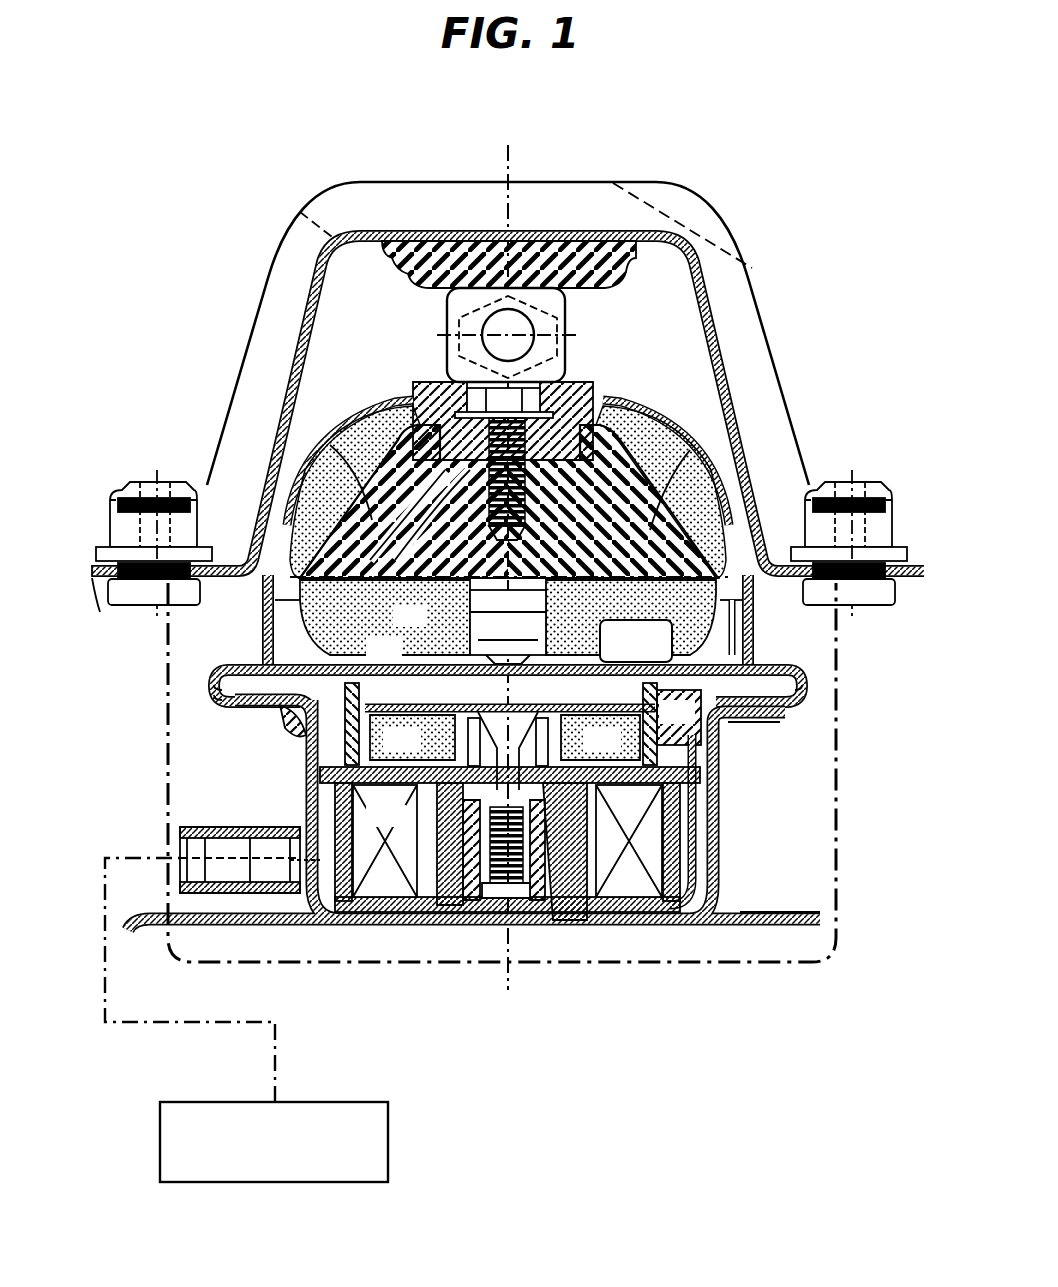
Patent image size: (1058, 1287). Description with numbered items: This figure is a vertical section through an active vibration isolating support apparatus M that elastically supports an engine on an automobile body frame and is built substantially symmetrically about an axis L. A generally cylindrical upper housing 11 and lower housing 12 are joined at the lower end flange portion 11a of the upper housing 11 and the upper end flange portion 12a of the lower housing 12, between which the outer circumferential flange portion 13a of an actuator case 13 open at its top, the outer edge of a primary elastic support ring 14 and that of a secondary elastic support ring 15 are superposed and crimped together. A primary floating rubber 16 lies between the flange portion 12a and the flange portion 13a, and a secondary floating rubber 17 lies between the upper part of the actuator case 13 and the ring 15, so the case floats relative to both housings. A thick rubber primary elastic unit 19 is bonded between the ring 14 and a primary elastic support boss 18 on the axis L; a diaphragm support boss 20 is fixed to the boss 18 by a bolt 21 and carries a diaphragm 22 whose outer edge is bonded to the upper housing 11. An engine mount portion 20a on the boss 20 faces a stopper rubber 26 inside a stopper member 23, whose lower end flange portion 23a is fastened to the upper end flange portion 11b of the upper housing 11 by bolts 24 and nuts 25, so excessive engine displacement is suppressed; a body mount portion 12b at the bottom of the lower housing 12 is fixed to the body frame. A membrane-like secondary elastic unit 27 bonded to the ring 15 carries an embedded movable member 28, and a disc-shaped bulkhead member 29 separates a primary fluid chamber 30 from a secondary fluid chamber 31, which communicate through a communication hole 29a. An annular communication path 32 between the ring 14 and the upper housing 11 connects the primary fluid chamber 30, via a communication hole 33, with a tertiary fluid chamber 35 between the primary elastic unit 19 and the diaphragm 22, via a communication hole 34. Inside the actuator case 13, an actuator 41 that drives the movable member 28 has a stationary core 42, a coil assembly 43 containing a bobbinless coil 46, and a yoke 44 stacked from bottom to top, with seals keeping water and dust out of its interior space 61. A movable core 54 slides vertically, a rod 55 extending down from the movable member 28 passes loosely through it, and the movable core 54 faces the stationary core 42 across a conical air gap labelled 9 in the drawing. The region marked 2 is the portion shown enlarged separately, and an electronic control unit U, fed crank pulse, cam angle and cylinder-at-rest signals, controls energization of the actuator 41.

The axis L is at (540, 152).
The active vibration isolating support apparatus M is at (780, 343).
The enlarged portion 2 is at (818, 966).
The bolt 9 is at (488, 928).
The upper housing 11 is at (260, 626).
The lower end flange portion 11a is at (214, 710).
The upper end flange portion 11b is at (100, 590).
The lower housing 12 is at (737, 809).
The upper end flange portion 12a is at (777, 727).
The body mount portion 12b is at (768, 907).
The actuator case 13 is at (712, 842).
The outer circumferential flange portion 13a is at (800, 688).
The primary elastic support ring 14 is at (509, 529).
The secondary elastic support ring 15 is at (352, 667).
The primary annular floating rubber 16 is at (230, 745).
The secondary annular floating rubber 17 is at (292, 732).
The primary elastic support boss 18 is at (345, 452).
The primary elastic unit 19 is at (648, 420).
The diaphragm support boss 20 is at (592, 372).
The engine mount portion 20a is at (566, 310).
The bolt 21 is at (470, 386).
The diaphragm 22 is at (368, 410).
The stopper member 23 is at (299, 324).
The lower end flange portion 23a is at (106, 560).
The bolts 24 is at (137, 598).
The nuts 25 is at (170, 500).
The stopper rubber 26 is at (418, 270).
The secondary elastic unit 27 is at (600, 737).
The movable member 28 is at (501, 721).
The bulkhead member 29 is at (473, 656).
The communication hole 29a is at (498, 654).
The primary fluid chamber 30 is at (752, 615).
The secondary fluid chamber 31 is at (412, 737).
The annular communication path 32 is at (294, 630).
The communication hole 33 is at (740, 642).
The communication hole 34 is at (735, 535).
The tertiary fluid chamber 35 is at (324, 454).
The actuator 41 is at (278, 788).
The stationary core 42 is at (561, 922).
The coil assembly 43 is at (668, 912).
The yoke 44 is at (679, 717).
The bobbinless coil 46 is at (385, 872).
The movable core 54 is at (416, 812).
The rod 55 is at (530, 740).
The interior space 61 is at (608, 690).
The electronic control unit U is at (193, 1102).